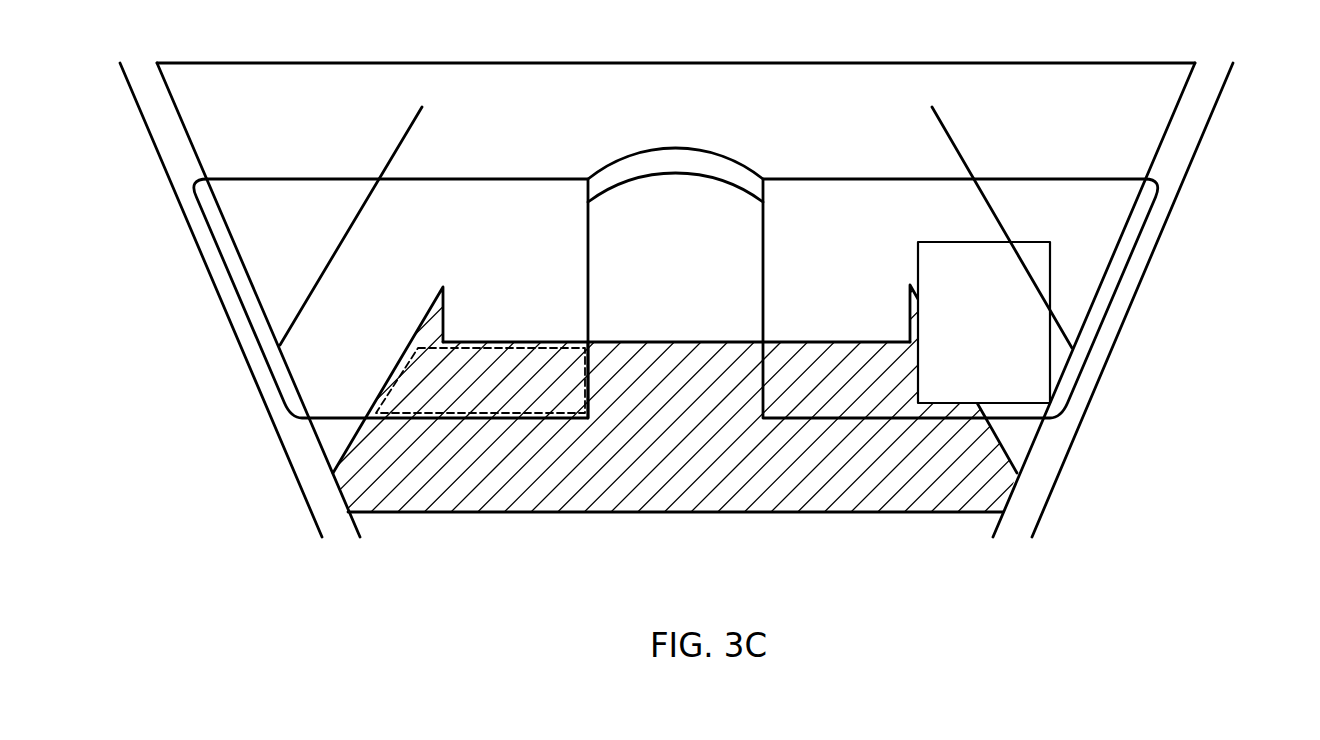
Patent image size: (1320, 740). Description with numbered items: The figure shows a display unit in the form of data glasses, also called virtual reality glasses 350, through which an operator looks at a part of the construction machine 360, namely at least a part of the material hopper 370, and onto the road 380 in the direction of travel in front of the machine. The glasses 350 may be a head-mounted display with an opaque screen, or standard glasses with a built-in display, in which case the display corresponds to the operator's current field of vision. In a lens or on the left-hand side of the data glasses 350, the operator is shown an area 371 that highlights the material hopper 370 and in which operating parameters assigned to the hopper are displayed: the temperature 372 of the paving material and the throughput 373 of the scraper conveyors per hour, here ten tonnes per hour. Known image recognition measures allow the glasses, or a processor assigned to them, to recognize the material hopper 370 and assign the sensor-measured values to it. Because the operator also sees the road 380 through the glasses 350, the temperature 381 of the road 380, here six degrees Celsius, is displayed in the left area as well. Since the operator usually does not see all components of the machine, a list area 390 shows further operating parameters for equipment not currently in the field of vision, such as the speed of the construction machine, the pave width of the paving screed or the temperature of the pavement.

The virtual reality glasses 350 is at (1146, 222).
The construction machine 360 is at (1217, 102).
The material hopper 370 is at (992, 494).
The area 371 is at (586, 357).
The operating parameter 372 is at (582, 379).
The operating parameter 373 is at (507, 412).
The road 380 is at (947, 129).
The temperature 381 is at (487, 243).
The list area 390 is at (1051, 242).